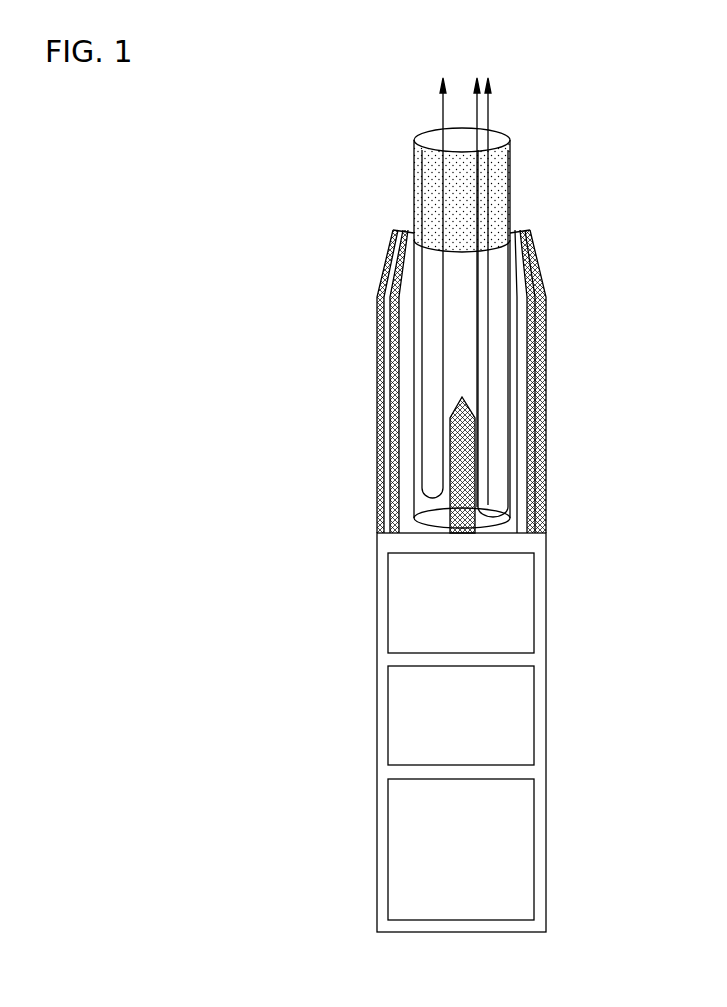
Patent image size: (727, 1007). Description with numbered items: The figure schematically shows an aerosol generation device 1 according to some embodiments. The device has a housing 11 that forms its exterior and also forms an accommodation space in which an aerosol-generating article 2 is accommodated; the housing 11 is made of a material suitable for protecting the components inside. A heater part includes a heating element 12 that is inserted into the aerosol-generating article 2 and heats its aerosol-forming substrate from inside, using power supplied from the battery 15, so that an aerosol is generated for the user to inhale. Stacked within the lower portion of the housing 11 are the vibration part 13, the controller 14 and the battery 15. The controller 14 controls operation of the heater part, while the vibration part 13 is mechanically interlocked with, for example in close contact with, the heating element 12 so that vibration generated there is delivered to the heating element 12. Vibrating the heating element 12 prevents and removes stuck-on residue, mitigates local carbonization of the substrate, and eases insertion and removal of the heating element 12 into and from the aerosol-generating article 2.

The aerosol generation device 1 is at (295, 258).
The aerosol-generating article 2 is at (540, 158).
The housing 11 is at (548, 352).
The heating element 12 is at (450, 462).
The vibration part 13 is at (534, 600).
The controller 14 is at (534, 713).
The battery 15 is at (534, 847).